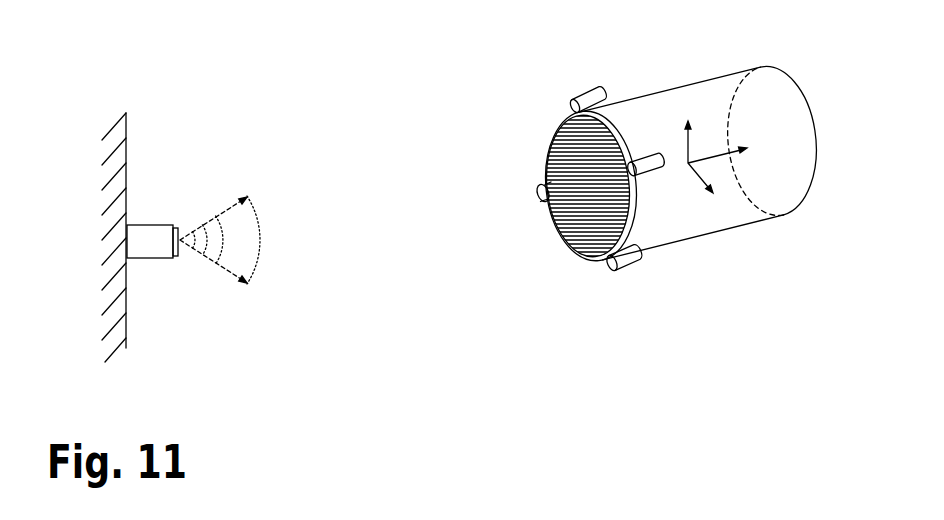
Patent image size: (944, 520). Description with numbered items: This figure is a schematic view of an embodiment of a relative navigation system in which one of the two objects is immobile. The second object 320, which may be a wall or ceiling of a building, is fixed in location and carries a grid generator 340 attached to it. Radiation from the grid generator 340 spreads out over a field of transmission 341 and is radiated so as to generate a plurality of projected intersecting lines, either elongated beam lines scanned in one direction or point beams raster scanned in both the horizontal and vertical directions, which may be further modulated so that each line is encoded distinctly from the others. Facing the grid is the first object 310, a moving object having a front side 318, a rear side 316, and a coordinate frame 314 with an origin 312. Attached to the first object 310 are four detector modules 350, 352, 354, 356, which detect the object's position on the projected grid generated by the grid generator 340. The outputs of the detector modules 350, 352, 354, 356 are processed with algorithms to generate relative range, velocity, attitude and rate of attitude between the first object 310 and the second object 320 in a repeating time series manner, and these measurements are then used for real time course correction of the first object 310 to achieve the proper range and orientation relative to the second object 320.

The first object 310 is at (718, 72).
The origin 312 is at (679, 169).
The coordinate frame 314 is at (669, 130).
The rear side 316 is at (808, 190).
The front side 318 is at (549, 154).
The second object 320 is at (133, 162).
The grid generator 340 is at (153, 264).
The field of transmission 341 is at (257, 253).
The detector module 350 is at (587, 95).
The detector module 352 is at (539, 186).
The detector module 354 is at (646, 156).
The detector module 356 is at (620, 266).